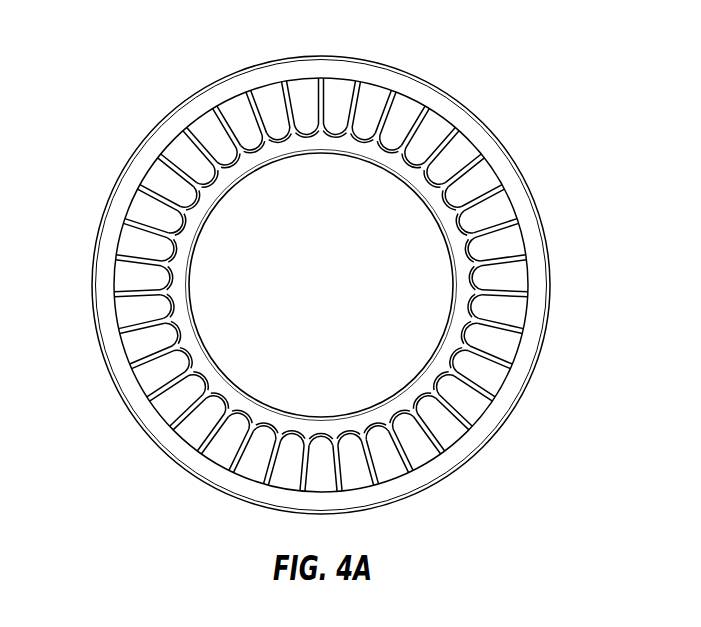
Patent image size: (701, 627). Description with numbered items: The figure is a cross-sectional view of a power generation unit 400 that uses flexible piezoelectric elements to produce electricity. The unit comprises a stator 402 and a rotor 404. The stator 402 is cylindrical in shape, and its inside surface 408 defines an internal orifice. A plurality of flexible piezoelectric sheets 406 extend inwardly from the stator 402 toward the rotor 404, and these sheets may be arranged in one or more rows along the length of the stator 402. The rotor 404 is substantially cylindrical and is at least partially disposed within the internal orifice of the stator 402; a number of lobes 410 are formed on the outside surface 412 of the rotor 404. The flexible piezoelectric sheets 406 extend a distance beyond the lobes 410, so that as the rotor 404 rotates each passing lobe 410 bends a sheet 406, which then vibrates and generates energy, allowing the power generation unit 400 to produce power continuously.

The power generation unit 400 is at (491, 41).
The stator 402 is at (500, 143).
The rotor 404 is at (280, 148).
The flexible piezoelectric sheet 406 is at (362, 98).
The inside surface 408 is at (230, 102).
The lobe 410 is at (185, 210).
The outside surface 412 is at (143, 253).